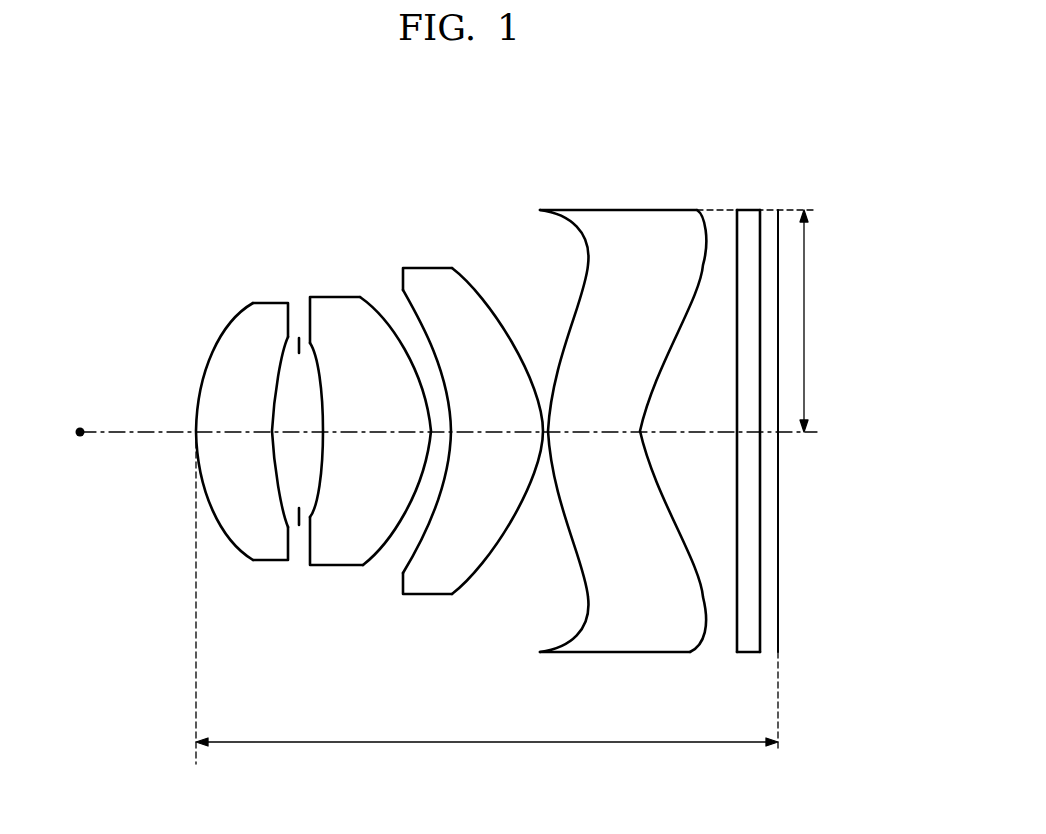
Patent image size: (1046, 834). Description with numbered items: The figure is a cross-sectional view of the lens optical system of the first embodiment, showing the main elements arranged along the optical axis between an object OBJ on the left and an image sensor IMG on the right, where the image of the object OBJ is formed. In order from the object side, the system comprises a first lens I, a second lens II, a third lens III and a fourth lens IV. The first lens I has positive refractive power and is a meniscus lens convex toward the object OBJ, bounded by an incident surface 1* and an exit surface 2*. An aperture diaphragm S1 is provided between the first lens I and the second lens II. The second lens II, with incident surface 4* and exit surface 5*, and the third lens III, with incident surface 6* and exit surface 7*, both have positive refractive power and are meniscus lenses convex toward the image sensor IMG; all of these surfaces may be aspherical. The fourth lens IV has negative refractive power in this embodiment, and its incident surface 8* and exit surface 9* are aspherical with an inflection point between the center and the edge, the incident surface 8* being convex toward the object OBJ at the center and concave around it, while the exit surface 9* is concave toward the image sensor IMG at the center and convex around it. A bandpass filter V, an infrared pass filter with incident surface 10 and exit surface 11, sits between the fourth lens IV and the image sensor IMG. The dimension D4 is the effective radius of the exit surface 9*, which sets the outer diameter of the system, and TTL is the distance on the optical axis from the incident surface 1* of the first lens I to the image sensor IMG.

The incident surface of the first lens 1 is at (213, 350).
The exit surface of the first lens 2 is at (278, 357).
The aperture diaphragm S1 is at (299, 337).
The incident surface of the second lens 4 is at (322, 357).
The exit surface of the second lens 5 is at (383, 306).
The incident surface of the third lens 6 is at (418, 322).
The exit surface of the third lens 7 is at (474, 296).
The incident surface of the fourth lens 8 is at (579, 227).
The exit surface of the fourth lens 9 is at (703, 247).
The incident surface of the bandpass filter 10 is at (735, 225).
The exit surface of the bandpass filter 11 is at (760, 216).
The image sensor IMG is at (778, 212).
The object OBJ is at (82, 426).
The first lens I is at (227, 441).
The second lens II is at (370, 441).
The third lens III is at (473, 441).
The fourth lens IV is at (623, 440).
The bandpass filter V is at (726, 440).
The effective radius of the exit surface of the fourth lens D4 is at (768, 321).
The total track length TTL is at (487, 604).